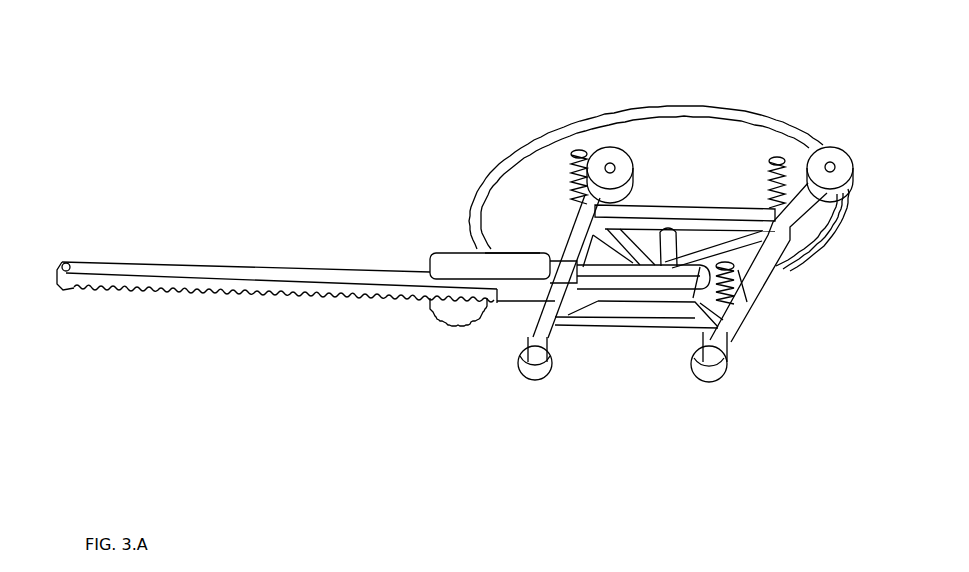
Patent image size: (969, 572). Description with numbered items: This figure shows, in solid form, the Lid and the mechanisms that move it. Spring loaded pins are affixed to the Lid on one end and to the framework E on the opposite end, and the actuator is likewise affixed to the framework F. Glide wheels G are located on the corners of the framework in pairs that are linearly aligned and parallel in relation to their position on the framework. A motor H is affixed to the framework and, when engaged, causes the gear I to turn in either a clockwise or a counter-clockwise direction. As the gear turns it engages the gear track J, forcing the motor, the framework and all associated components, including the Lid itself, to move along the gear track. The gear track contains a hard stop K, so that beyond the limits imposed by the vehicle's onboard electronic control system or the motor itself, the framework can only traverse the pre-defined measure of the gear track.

The framework E is at (553, 317).
The framework F is at (592, 235).
The glide wheels G is at (633, 148).
The motor H is at (432, 253).
The gear I is at (460, 330).
The gear track J is at (80, 292).
The hard stop K is at (68, 293).